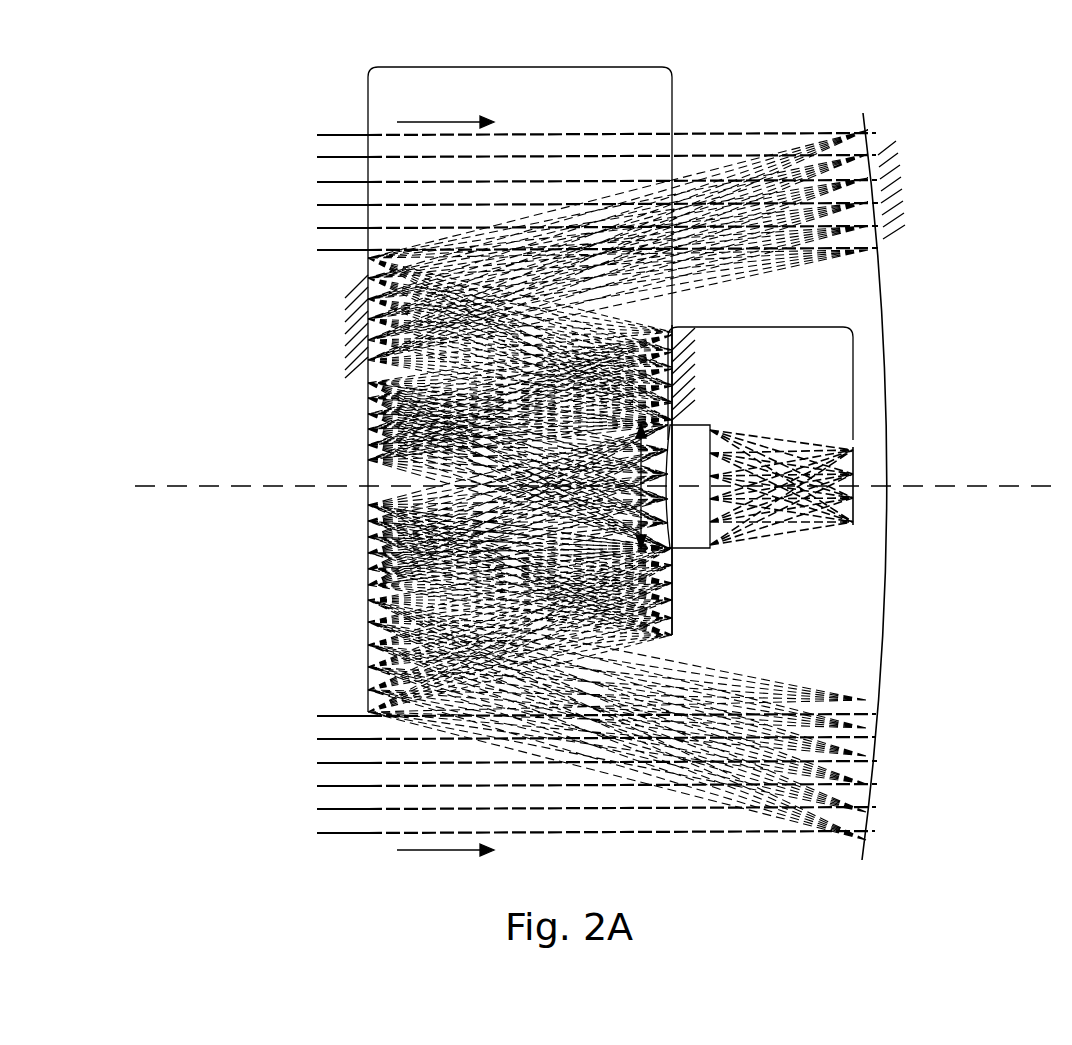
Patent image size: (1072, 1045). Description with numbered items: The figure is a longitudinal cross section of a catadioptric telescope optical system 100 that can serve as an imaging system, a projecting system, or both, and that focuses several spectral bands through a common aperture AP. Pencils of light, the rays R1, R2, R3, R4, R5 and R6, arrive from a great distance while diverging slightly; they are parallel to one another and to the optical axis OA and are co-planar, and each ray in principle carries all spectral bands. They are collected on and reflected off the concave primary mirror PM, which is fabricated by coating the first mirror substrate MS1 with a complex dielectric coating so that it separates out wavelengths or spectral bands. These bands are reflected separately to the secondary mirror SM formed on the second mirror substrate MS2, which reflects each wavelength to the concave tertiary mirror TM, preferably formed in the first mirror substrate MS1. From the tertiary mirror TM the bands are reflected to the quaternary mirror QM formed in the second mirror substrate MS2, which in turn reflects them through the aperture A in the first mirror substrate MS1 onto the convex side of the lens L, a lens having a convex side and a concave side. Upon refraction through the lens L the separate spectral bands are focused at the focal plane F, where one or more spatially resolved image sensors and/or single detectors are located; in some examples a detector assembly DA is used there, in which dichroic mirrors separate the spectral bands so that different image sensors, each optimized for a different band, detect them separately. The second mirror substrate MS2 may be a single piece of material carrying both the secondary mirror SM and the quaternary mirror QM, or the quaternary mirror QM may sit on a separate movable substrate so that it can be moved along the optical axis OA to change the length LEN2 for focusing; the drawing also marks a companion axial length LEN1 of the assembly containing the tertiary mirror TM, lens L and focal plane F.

The optical system 100 is at (786, 82).
The length LEN2 is at (535, 67).
The first lens group / optical unit LEN1 is at (785, 327).
The common aperture AP is at (541, 130).
The primary mirror PM is at (872, 160).
The secondary mirror SM is at (368, 283).
The tertiary mirror TM is at (672, 620).
The quaternary mirror QM is at (368, 400).
The first mirror substrate MS1 is at (893, 210).
The second mirror substrate MS2 is at (355, 340).
The optical axis OA is at (200, 486).
The ray R1 is at (317, 135).
The ray R2 is at (317, 157).
The ray R3 is at (317, 182).
The ray R4 is at (317, 786).
The ray R5 is at (317, 809).
The ray R6 is at (317, 833).
The aperture A is at (634, 486).
The lens L is at (692, 552).
The focal plane F is at (852, 462).
The detector assembly DA is at (860, 442).